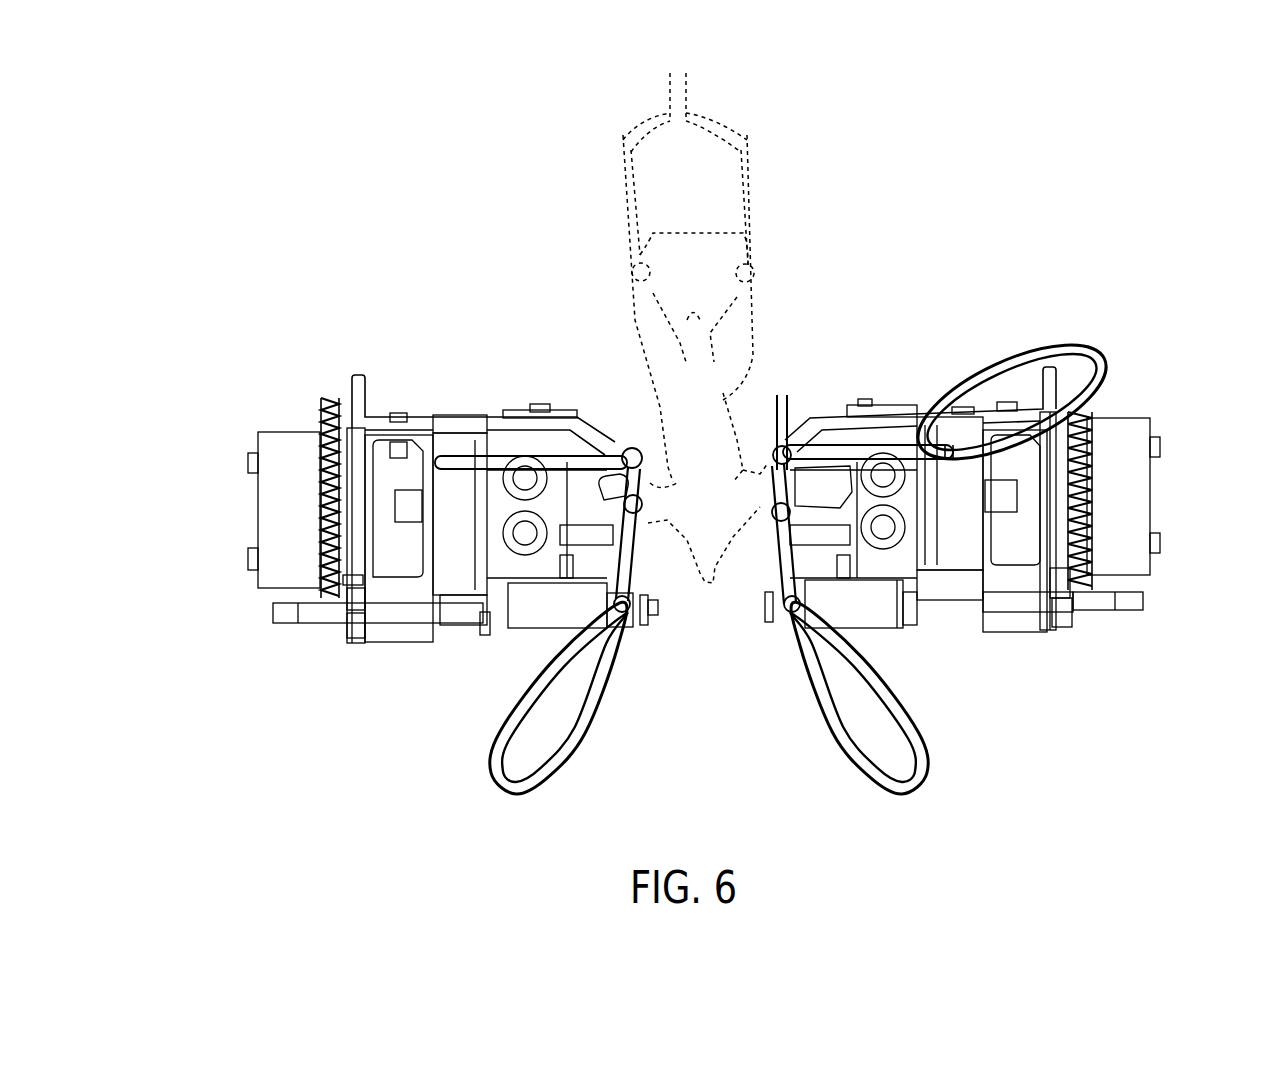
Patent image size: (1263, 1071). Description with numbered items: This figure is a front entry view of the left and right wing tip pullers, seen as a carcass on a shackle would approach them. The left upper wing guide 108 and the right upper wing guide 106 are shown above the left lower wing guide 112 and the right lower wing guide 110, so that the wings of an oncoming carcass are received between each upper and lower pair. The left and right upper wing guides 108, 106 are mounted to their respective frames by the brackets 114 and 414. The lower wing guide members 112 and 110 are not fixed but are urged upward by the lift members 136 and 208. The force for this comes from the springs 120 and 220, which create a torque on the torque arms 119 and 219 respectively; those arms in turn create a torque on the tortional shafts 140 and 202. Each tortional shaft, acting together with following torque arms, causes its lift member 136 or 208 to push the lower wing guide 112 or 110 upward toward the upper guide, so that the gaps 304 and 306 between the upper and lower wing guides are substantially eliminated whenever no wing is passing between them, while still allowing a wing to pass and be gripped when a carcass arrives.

The right upper wing guide 106 is at (622, 445).
The left upper wing guide 108 is at (872, 454).
The right lower wing guide 110 is at (615, 583).
The left lower wing guide 112 is at (813, 583).
The bracket 114 is at (803, 420).
The torque arm 119 is at (1067, 623).
The spring 120 is at (1092, 440).
The lift member 136 is at (636, 630).
The tortional shaft 140 is at (1133, 603).
The tortional shaft 202 is at (277, 623).
The lift member 208 is at (771, 565).
The torque arm 219 is at (347, 643).
The spring 220 is at (322, 468).
The gap 304 is at (780, 392).
The gap 306 is at (644, 508).
The bracket 414 is at (577, 418).